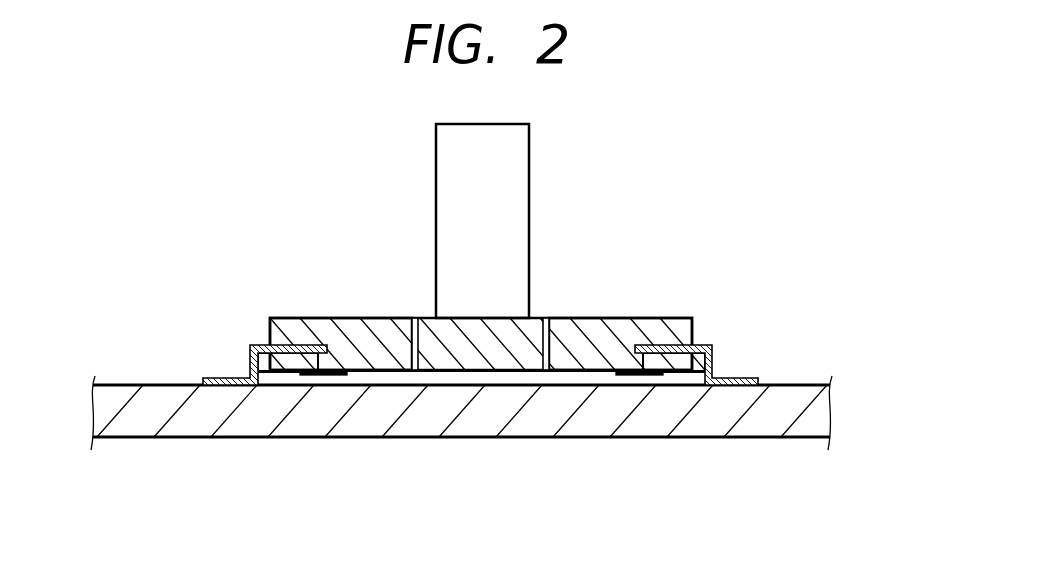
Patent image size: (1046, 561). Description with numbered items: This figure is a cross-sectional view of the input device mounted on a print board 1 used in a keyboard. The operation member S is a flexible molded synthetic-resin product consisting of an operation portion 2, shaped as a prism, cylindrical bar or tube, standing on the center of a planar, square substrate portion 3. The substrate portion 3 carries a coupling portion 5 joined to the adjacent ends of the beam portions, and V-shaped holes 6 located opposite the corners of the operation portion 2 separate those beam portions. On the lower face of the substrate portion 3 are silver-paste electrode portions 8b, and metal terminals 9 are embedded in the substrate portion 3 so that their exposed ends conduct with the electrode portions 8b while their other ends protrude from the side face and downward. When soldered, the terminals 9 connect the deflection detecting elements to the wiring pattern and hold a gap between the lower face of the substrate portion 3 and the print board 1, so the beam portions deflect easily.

The print board 1 is at (785, 426).
The operation portion 2 is at (512, 143).
The substrate portion 3 is at (648, 317).
The coupling portion 5 is at (308, 322).
The V-shaped holes 6 is at (414, 370).
The electrode portions 8b is at (315, 374).
The terminals 9 is at (252, 346).
The operation member S is at (598, 230).